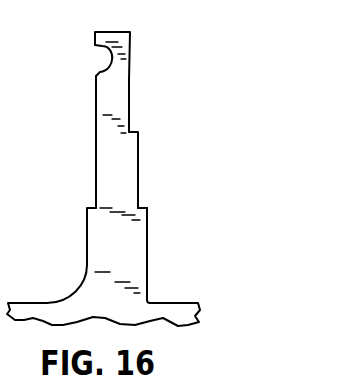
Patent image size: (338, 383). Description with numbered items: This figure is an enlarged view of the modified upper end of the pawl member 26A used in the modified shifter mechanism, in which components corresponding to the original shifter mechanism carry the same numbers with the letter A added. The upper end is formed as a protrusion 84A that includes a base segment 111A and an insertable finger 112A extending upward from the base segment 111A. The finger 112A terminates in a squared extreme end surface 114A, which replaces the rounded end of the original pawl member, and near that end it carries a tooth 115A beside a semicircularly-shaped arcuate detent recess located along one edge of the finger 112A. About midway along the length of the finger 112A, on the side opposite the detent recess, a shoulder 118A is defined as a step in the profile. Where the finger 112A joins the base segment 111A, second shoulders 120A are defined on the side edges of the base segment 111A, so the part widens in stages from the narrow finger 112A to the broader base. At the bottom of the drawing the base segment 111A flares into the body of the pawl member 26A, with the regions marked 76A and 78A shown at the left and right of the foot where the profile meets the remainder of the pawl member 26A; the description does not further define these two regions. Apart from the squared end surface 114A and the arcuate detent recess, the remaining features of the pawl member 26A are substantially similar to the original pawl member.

The pawl member 26A is at (152, 69).
The squared extreme end surface 114A is at (110, 31).
The tooth 115A is at (102, 58).
The finger 112A is at (96, 143).
The shoulder 118A is at (130, 129).
The second shoulder 120A is at (88, 206).
The protrusion 84A is at (153, 267).
The base segment 111A is at (97, 248).
The base flange 76A is at (18, 303).
The base flange 78A is at (165, 302).